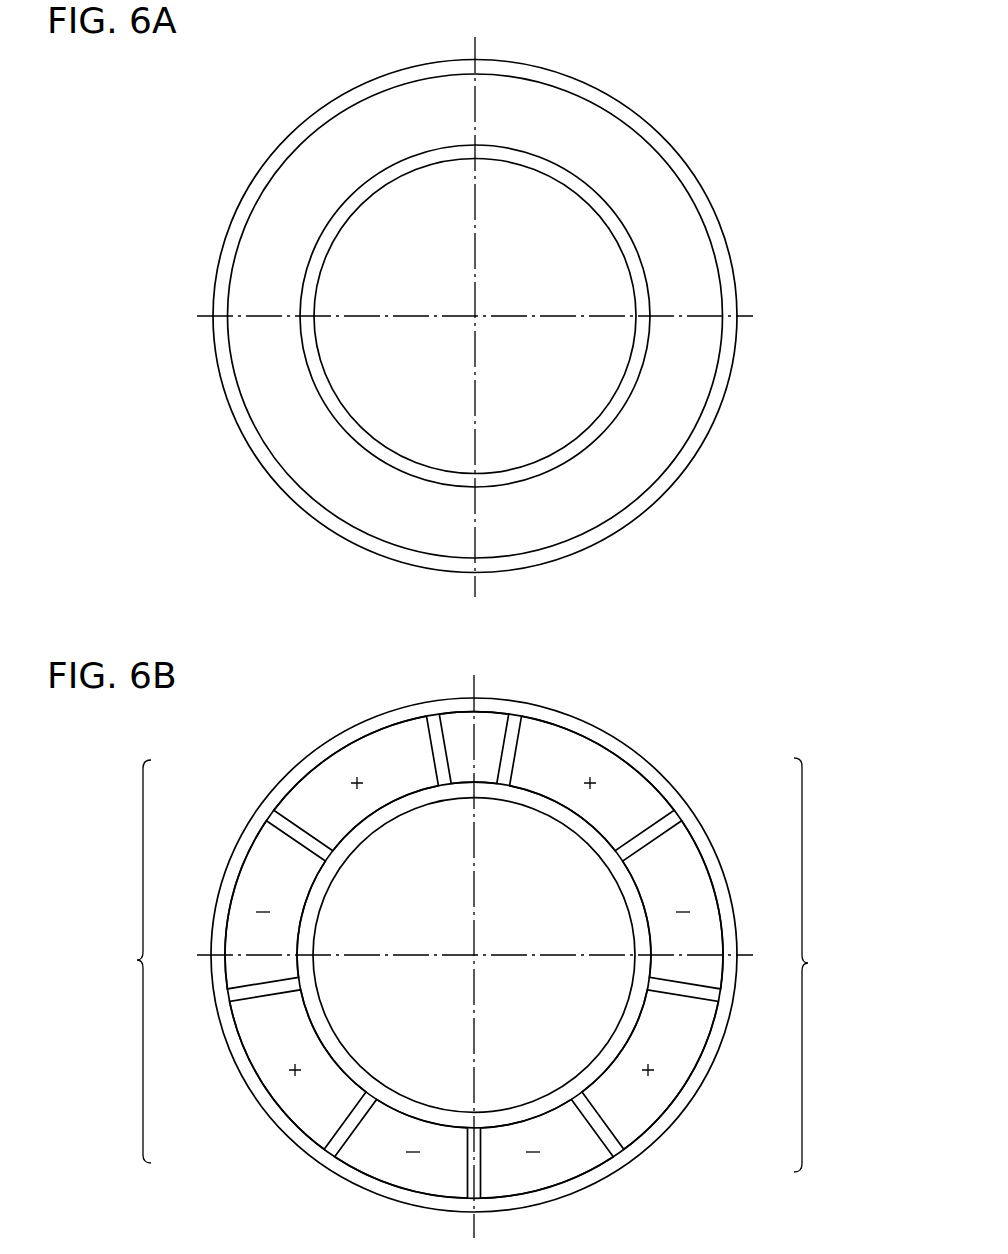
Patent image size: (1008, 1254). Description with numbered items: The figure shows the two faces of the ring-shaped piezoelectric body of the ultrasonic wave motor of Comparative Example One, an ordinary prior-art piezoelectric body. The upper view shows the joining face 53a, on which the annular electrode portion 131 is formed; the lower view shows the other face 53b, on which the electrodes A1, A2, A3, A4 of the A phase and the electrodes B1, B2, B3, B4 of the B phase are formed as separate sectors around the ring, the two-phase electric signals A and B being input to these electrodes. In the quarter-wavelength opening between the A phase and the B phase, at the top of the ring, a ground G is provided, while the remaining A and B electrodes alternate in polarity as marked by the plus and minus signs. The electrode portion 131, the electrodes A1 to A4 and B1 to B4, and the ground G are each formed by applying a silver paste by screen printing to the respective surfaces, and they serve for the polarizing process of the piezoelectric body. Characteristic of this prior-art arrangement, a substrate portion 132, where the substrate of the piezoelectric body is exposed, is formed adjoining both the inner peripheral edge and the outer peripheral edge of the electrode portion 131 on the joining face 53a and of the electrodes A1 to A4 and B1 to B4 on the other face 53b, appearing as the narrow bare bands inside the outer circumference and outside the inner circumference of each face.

In FIG. 6A, the joining face 53a is at (672, 73).
In FIG. 6B, the other face 53b is at (672, 712).
In FIG. 6A, the electrode portion 131 is at (278, 230).
In FIG. 6A, the substrate portion 132 is at (280, 155).
In FIG. 6B, the substrate portion 132 is at (427, 708).
In FIG. 6B, the ground G is at (488, 733).
In FIG. 6B, the electrode A1 is at (315, 793).
In FIG. 6B, the electrode A2 is at (262, 880).
In FIG. 6B, the electrode A3 is at (268, 1055).
In FIG. 6B, the electrode A4 is at (365, 1157).
In FIG. 6B, the electrode B1 is at (647, 802).
In FIG. 6B, the electrode B2 is at (695, 885).
In FIG. 6B, the electrode B3 is at (687, 1040).
In FIG. 6B, the electrode B4 is at (580, 1157).